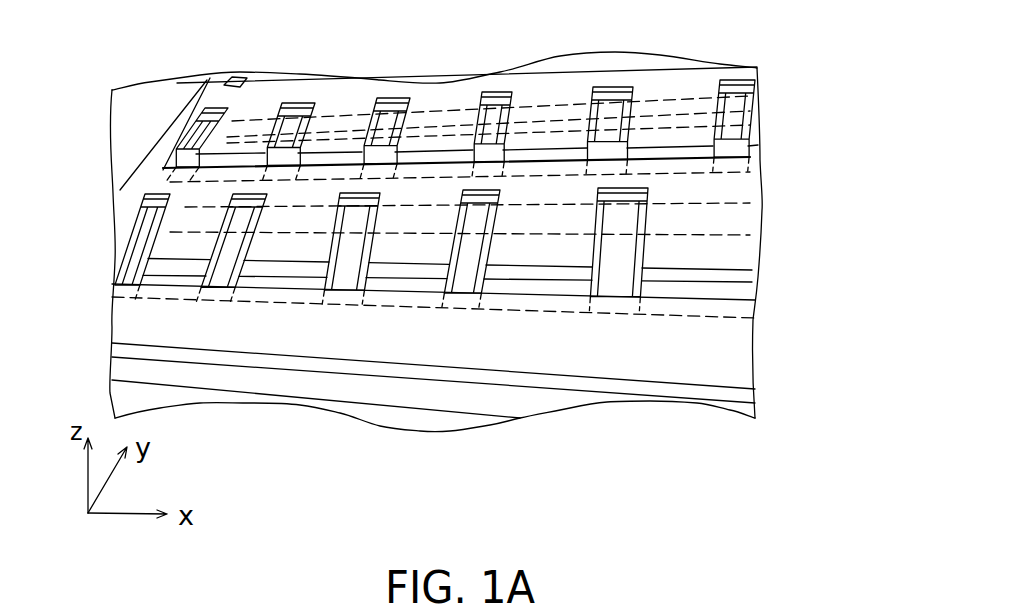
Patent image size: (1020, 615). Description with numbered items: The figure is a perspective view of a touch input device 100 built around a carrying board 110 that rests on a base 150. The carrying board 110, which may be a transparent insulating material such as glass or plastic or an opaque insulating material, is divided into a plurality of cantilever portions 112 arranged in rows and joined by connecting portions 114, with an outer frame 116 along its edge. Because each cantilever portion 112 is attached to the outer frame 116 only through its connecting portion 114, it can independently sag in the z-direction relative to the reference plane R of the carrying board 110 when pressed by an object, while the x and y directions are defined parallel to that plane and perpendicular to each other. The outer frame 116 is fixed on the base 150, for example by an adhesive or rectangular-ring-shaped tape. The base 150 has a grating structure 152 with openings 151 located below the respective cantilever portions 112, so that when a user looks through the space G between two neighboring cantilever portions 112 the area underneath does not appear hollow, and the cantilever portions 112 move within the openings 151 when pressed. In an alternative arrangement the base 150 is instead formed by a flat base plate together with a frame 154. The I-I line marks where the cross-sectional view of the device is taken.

The touch input device 100 is at (760, 523).
The carrying board 110 is at (703, 395).
The cantilever portions 112 is at (402, 250).
The connecting portions 114 is at (397, 88).
The outer frame 116 is at (226, 229).
The base 150 is at (233, 382).
The openings 151 is at (622, 292).
The grating structure 152 is at (627, 257).
The frame 154 is at (492, 398).
The space G is at (197, 170).
The reference plane R is at (552, 108).
The I-I line I is at (263, 175).